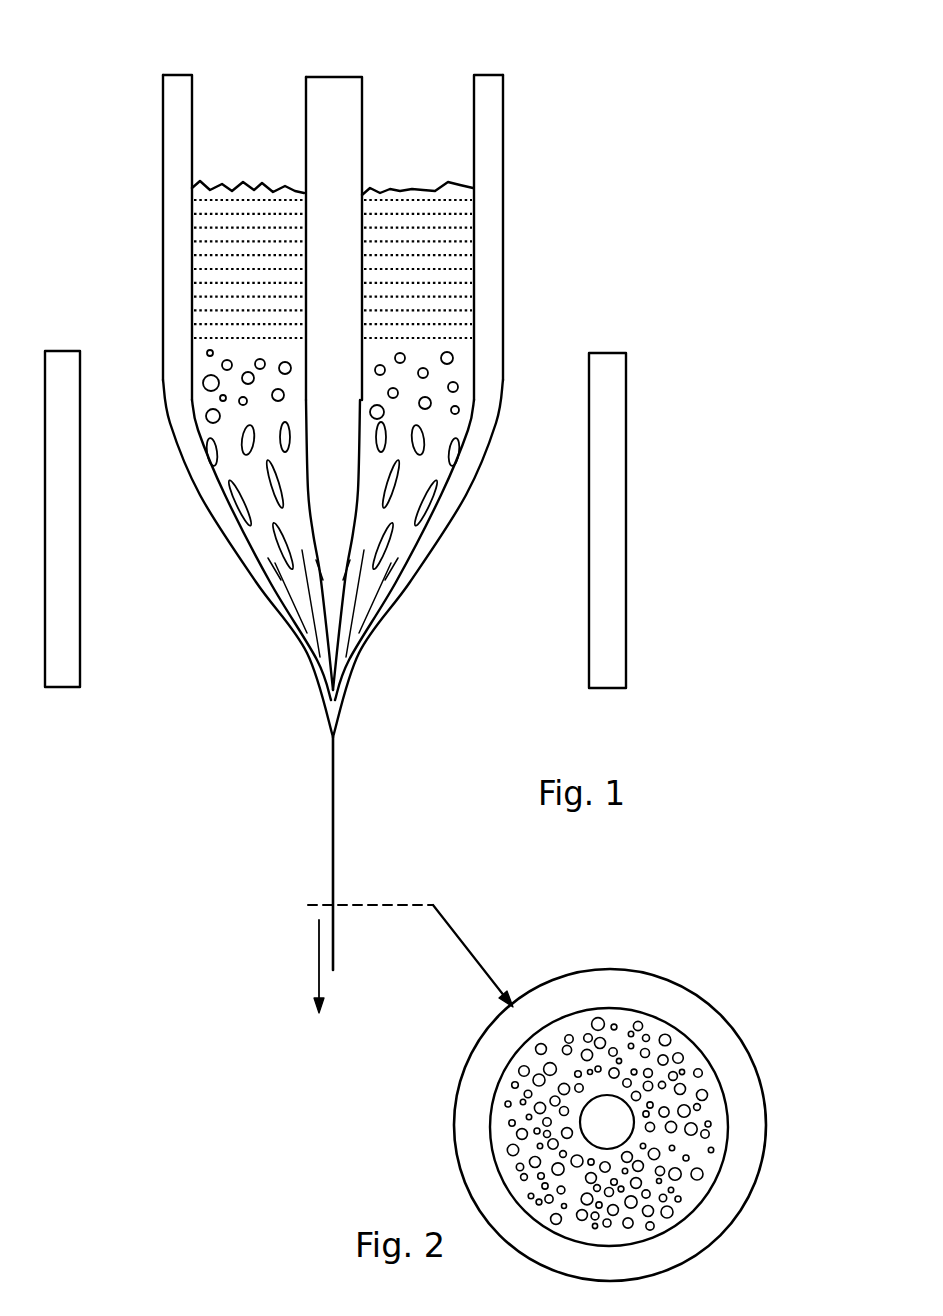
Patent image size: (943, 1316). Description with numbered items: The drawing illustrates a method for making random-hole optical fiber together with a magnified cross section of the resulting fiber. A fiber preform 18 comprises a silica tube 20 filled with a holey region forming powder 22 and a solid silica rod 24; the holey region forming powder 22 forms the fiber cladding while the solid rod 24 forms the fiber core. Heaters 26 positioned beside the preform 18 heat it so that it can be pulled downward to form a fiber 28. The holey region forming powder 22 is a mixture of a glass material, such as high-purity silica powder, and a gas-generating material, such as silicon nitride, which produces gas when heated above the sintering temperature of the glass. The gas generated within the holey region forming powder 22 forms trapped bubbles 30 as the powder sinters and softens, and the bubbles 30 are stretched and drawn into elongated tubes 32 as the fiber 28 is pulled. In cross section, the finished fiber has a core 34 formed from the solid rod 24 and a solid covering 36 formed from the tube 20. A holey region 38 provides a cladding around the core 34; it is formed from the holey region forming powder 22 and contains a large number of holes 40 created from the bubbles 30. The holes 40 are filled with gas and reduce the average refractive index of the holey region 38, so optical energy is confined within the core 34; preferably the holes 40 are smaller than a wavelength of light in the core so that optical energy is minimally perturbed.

In FIG. 1, the fiber preform 18 is at (604, 147).
In FIG. 1, the silica tube 20 is at (175, 75).
In FIG. 1, the holey region forming powder 22 is at (447, 270).
In FIG. 1, the solid silica rod 24 is at (336, 90).
In FIG. 1, the heaters 26 is at (62, 351).
In FIG. 1, the fiber 28 is at (334, 845).
In FIG. 1, the trapped bubbles 30 is at (453, 407).
In FIG. 1, the elongated tubes 32 is at (370, 607).
In FIG. 2, the core 34 is at (607, 1122).
In FIG. 2, the solid covering 36 is at (636, 995).
In FIG. 2, the holey region 38 is at (540, 1028).
In FIG. 2, the holes 40 is at (700, 1146).